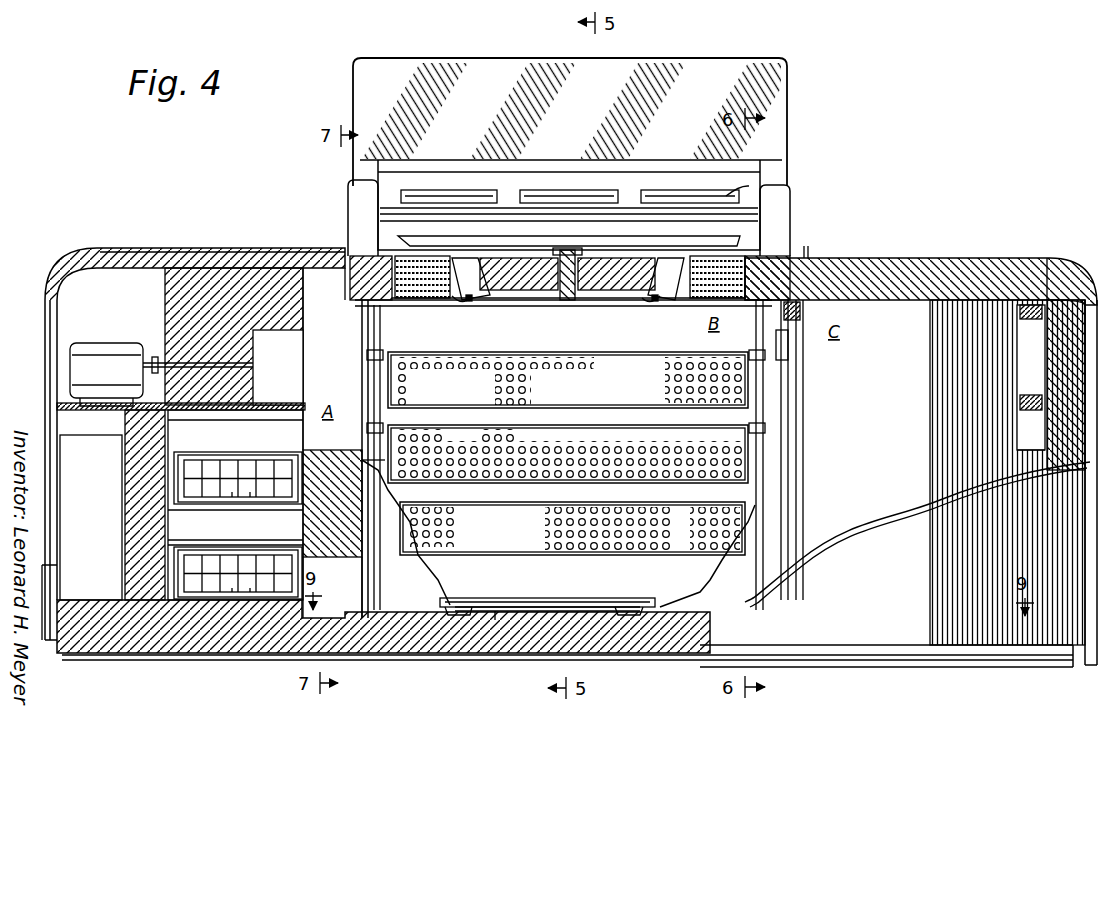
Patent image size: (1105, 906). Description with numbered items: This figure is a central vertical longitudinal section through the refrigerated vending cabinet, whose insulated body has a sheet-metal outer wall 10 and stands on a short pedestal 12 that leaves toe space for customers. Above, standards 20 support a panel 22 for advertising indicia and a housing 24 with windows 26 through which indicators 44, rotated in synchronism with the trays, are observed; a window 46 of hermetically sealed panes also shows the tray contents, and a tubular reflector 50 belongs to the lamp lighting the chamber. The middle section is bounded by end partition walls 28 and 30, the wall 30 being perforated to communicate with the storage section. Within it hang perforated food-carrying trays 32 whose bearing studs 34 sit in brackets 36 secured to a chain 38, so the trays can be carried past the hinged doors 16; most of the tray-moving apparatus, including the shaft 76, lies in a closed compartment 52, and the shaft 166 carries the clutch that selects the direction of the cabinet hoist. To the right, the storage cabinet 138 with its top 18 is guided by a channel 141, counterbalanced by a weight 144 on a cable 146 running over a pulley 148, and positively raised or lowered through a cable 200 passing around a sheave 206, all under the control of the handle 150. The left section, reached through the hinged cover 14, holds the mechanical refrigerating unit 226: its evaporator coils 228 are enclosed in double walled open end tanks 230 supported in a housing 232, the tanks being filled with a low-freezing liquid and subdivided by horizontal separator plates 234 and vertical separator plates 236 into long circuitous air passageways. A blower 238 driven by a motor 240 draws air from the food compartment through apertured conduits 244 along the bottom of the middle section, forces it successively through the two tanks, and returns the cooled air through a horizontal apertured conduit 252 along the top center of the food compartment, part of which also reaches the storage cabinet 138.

The outer wall 10 is at (1010, 560).
The pedestal 12 is at (55, 655).
The hinged cover 14 is at (185, 248).
The hinged doors 16 is at (540, 262).
The top 18 is at (935, 268).
The standards 20 is at (350, 217).
The panel 22 is at (765, 80).
The housing 24 is at (750, 182).
The windows 26 is at (726, 196).
The end partition wall 28 is at (332, 534).
The end partition wall 30 is at (775, 400).
The food-carrying trays 32 is at (650, 396).
The bearing studs 34 is at (380, 350).
The brackets 36 is at (384, 350).
The chain 38 is at (364, 314).
The indicators 44 is at (590, 194).
The window 46 is at (420, 262).
The reflector 50 is at (500, 232).
The closed compartment 52 is at (333, 297).
The shaft 76 is at (488, 613).
The cabinet 138 is at (962, 292).
The channel 141 is at (790, 360).
The weight 144 is at (1040, 358).
The cable 146 is at (1012, 382).
The pulley 148 is at (1040, 292).
The handle 150 is at (810, 250).
The shaft 166 is at (535, 620).
The cable 200 is at (800, 447).
The sheave 206 is at (800, 318).
The mechanical refrigerating unit 226 is at (118, 575).
The evaporator coils 228 is at (218, 470).
The double walled open end tanks 230 is at (265, 470).
The housing 232 is at (185, 443).
The horizontal separator plates 234 is at (255, 555).
The vertical separator plates 236 is at (205, 565).
The blower 238 is at (298, 364).
The motor 240 is at (161, 374).
The apertured conduits 244 is at (570, 605).
The horizontal apertured conduit 252 is at (468, 296).